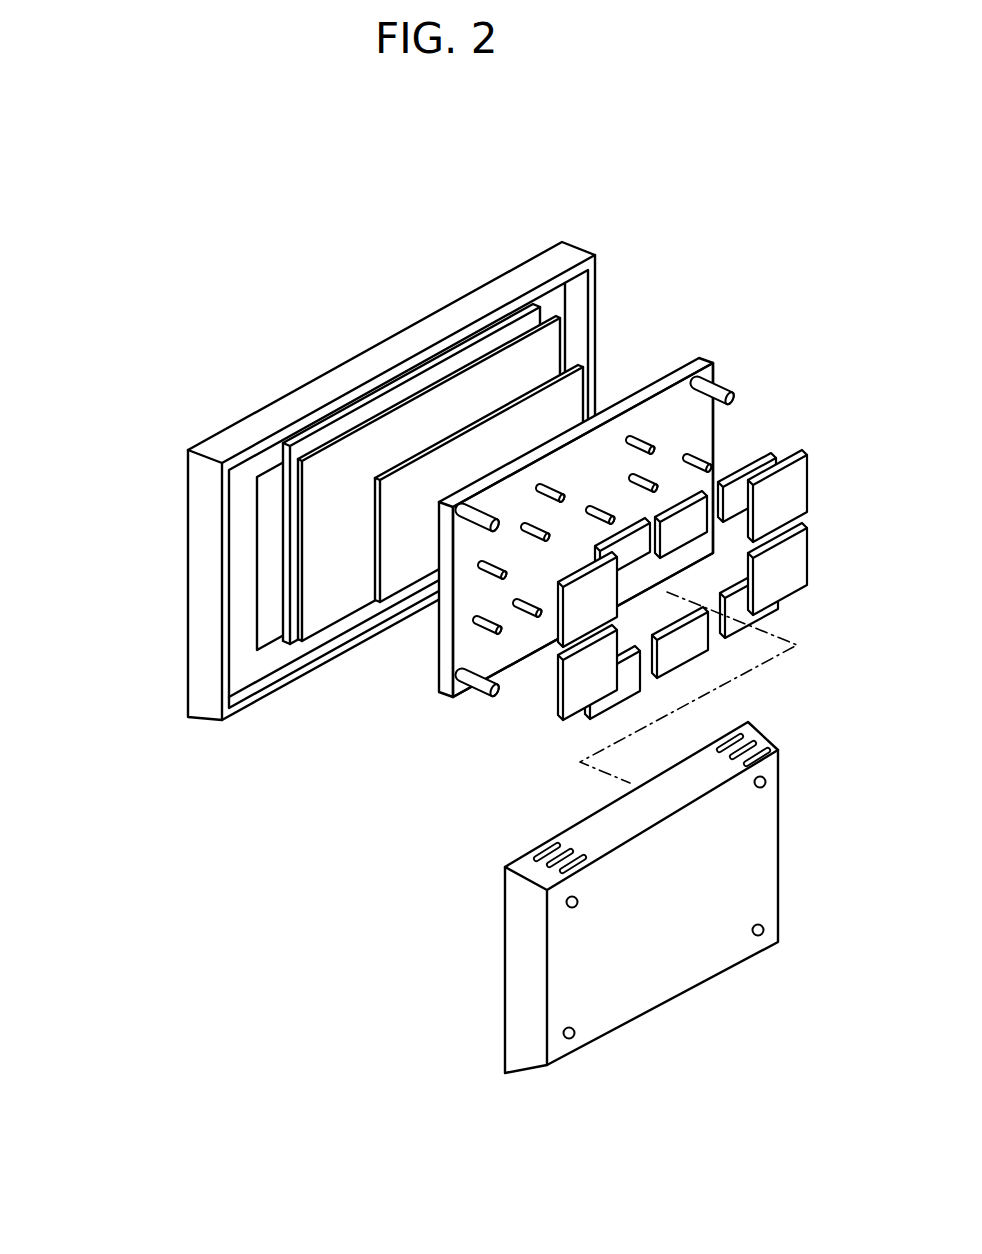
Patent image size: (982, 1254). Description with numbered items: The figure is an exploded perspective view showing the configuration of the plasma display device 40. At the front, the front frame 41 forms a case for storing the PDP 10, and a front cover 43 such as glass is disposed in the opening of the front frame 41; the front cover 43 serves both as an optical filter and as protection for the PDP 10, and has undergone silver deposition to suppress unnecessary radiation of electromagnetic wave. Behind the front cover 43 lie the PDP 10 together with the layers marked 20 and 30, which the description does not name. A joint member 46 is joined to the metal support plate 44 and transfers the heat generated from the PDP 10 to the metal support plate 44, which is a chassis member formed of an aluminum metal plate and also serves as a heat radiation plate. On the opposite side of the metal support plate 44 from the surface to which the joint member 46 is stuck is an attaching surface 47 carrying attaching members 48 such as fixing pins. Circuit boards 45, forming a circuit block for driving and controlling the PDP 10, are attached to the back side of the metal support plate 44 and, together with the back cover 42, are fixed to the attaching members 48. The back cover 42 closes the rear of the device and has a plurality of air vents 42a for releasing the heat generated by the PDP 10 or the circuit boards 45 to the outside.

The PDP 10 is at (186, 327).
The backlight unit 20 is at (308, 432).
The liquid crystal panel 30 is at (355, 425).
The plasma display device 40 is at (313, 331).
The front frame 41 is at (208, 695).
The back cover 42 is at (582, 897).
The air vents 42a is at (540, 862).
The front cover 43 is at (272, 533).
The metal support plate 44 is at (445, 644).
The circuit boards 45 is at (577, 684).
The joint member 46 is at (532, 417).
The attaching surface 47 is at (467, 660).
The attaching members 48 is at (717, 390).